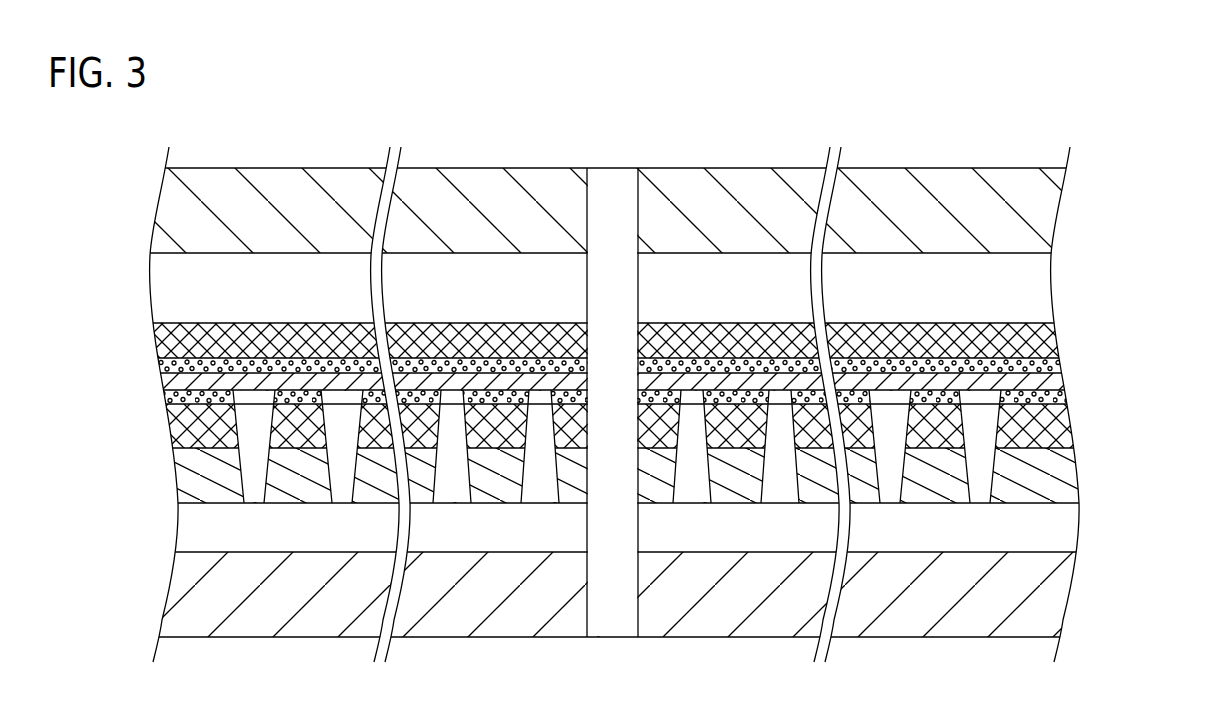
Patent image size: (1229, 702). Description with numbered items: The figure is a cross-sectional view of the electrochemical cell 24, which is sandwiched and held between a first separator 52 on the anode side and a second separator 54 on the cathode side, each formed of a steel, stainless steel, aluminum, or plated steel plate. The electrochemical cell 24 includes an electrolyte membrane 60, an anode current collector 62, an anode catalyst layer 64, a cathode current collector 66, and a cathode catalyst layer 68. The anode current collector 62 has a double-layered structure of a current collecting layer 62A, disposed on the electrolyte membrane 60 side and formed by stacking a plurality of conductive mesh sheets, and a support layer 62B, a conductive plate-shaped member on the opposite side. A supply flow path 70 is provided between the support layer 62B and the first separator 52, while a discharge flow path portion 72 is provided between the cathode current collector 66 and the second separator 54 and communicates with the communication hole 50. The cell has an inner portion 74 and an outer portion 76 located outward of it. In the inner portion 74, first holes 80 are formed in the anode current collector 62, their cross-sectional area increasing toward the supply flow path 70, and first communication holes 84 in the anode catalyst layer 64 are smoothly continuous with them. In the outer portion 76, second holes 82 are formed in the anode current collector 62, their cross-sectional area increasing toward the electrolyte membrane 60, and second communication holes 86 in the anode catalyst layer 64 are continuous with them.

The electrochemical cell 24 is at (364, 97).
The communication hole 50 is at (611, 180).
The first separator 52 is at (1058, 588).
The second separator 54 is at (1037, 218).
The electrolyte membrane 60 is at (163, 380).
The anode current collector 62 is at (614, 449).
The current collecting layer 62A is at (1053, 416).
The support layer 62B is at (1048, 465).
The anode catalyst layer 64 is at (165, 397).
The cathode current collector 66 is at (152, 323).
The cathode catalyst layer 68 is at (158, 363).
The supply flow path 70 is at (198, 543).
The discharge flow path portion 72 is at (182, 288).
The inner portion 74 is at (730, 151).
The outer portion 76 is at (901, 151).
The first hole 80 is at (788, 488).
The second hole 82 is at (984, 487).
The first communication hole 84 is at (777, 399).
The second communication hole 86 is at (977, 399).